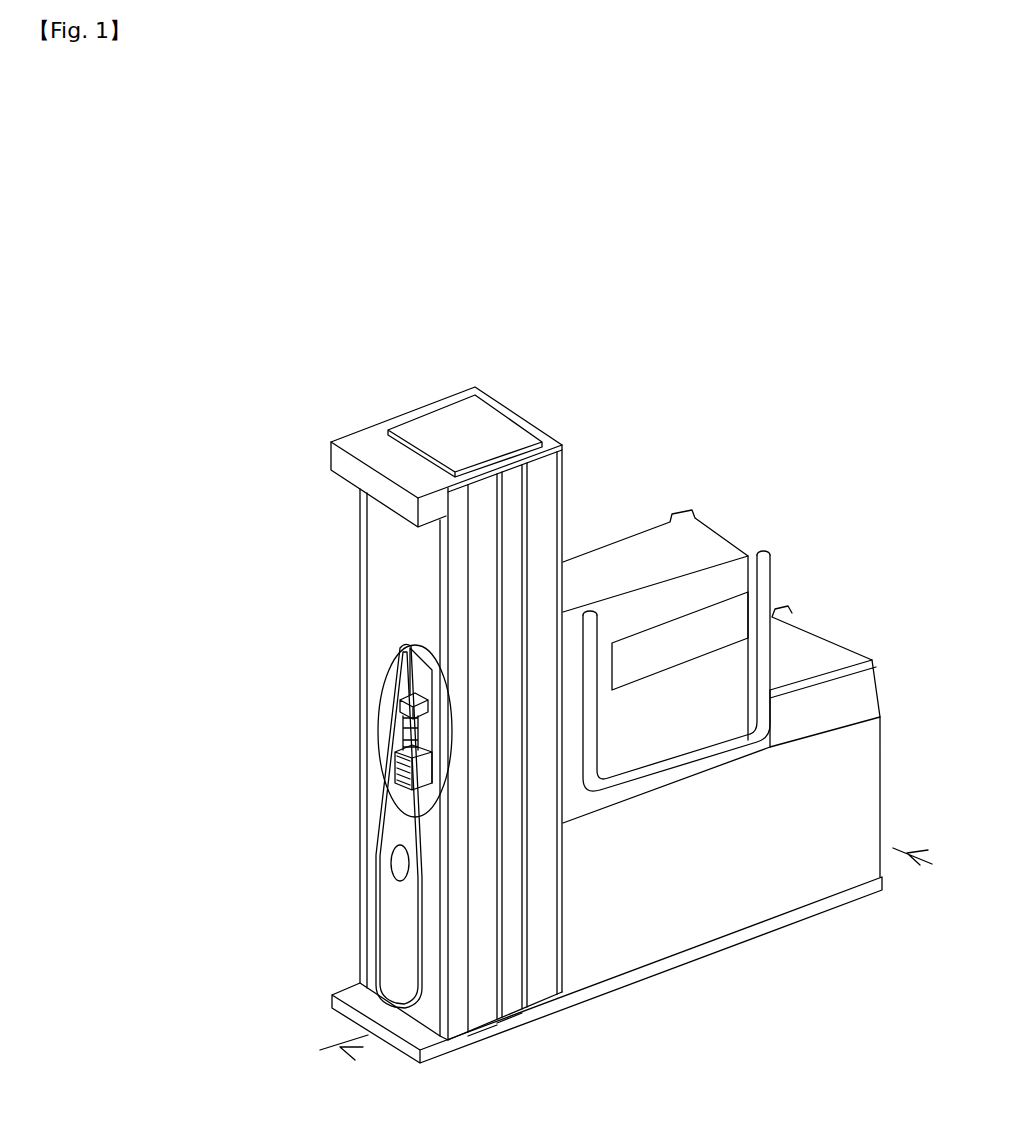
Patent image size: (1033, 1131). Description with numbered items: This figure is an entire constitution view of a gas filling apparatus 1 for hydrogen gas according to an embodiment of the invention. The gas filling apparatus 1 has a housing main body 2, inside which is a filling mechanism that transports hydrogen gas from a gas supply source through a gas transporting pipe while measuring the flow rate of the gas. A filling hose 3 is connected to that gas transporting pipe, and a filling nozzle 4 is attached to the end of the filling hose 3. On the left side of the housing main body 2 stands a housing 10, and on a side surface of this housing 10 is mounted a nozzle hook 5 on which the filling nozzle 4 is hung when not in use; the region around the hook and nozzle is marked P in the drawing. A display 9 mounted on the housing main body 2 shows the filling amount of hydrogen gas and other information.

The gas filling apparatus 1 is at (552, 323).
The housing main body 2 is at (678, 898).
The filling hose 3 is at (377, 898).
The filling nozzle 4 is at (405, 731).
The nozzle hook 5 is at (405, 802).
The display 9 is at (683, 552).
The housing 10 is at (562, 493).
The position P is at (380, 693).